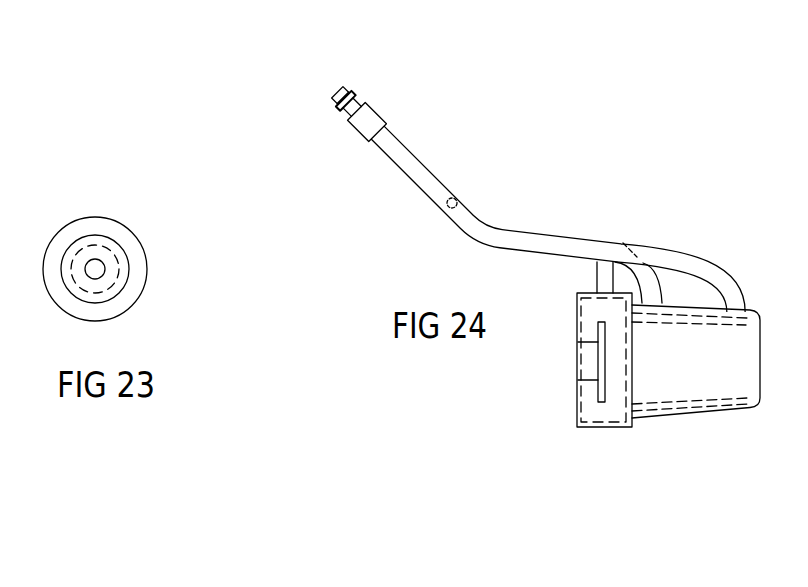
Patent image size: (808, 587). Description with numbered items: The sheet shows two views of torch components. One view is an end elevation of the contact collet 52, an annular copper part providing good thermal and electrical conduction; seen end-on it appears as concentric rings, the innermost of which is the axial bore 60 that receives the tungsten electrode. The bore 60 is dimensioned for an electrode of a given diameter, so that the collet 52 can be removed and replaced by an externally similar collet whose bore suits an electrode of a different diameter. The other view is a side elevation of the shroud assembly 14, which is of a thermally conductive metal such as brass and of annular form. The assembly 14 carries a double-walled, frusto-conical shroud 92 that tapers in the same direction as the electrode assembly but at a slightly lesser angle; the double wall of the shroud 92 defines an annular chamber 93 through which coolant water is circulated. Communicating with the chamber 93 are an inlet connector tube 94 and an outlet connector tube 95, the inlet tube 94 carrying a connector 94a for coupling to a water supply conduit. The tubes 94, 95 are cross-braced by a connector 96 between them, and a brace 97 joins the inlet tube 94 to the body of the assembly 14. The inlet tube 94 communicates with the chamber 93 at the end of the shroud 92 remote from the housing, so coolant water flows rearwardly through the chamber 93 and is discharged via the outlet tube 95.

In FIG. 24, the shroud assembly 14 is at (532, 396).
In FIG. 23, the contact collet 52 is at (128, 229).
In FIG. 23, the axial bore 60 is at (95, 268).
In FIG. 24, the shroud 92 is at (678, 418).
In FIG. 24, the annular chamber 93 is at (707, 407).
In FIG. 24, the inlet connector tube 94 is at (509, 236).
In FIG. 24, the connector 94a is at (336, 99).
In FIG. 24, the outlet connector tube 95 is at (648, 278).
In FIG. 24, the connector 96 is at (452, 201).
In FIG. 24, the brace 97 is at (597, 265).